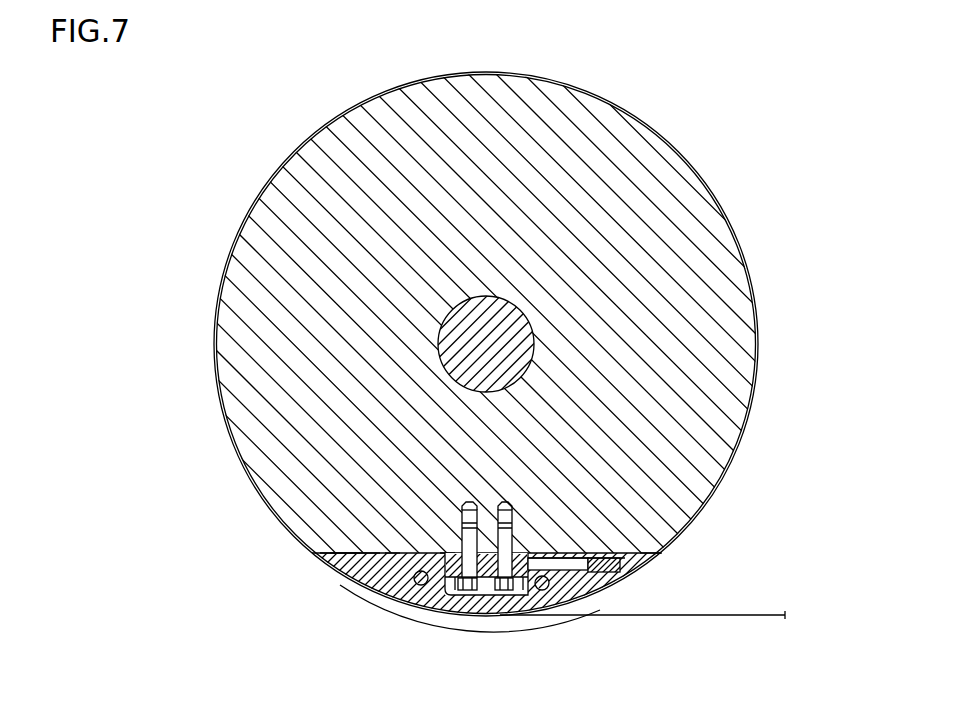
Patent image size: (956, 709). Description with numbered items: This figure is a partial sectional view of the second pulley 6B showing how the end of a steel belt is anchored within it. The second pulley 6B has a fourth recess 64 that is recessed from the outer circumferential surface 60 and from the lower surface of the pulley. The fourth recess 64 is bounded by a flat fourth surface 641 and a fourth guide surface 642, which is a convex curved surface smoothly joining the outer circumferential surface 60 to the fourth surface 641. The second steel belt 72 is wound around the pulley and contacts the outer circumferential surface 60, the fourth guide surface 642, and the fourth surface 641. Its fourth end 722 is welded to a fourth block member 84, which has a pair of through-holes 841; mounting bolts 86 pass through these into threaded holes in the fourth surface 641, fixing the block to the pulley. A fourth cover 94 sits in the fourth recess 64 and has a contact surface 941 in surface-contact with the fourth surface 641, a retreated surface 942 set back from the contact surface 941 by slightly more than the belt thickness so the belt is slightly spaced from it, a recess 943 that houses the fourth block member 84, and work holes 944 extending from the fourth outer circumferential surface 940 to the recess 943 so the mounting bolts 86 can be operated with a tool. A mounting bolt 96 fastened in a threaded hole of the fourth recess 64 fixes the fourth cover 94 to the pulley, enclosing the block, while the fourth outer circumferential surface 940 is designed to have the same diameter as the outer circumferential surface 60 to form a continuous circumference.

The second pulley 6B is at (727, 356).
The outer circumferential surface 60 is at (254, 490).
The fourth recess 64 is at (345, 556).
The fourth surface 641 is at (393, 552).
The fourth guide surface 642 is at (666, 550).
The second steel belt 72 is at (727, 616).
The fourth end 722 is at (518, 552).
The fourth block member 84 is at (447, 604).
The through-holes 841 is at (470, 598).
The mounting bolts 86 is at (541, 593).
The fourth cover 94 is at (390, 583).
The fourth outer circumferential surface 940 is at (367, 586).
The contact surface 941 is at (354, 552).
The retreated surface 942 is at (592, 556).
The recess 943 is at (447, 552).
The work holes 944 is at (498, 598).
The mounting bolt 96 is at (421, 587).